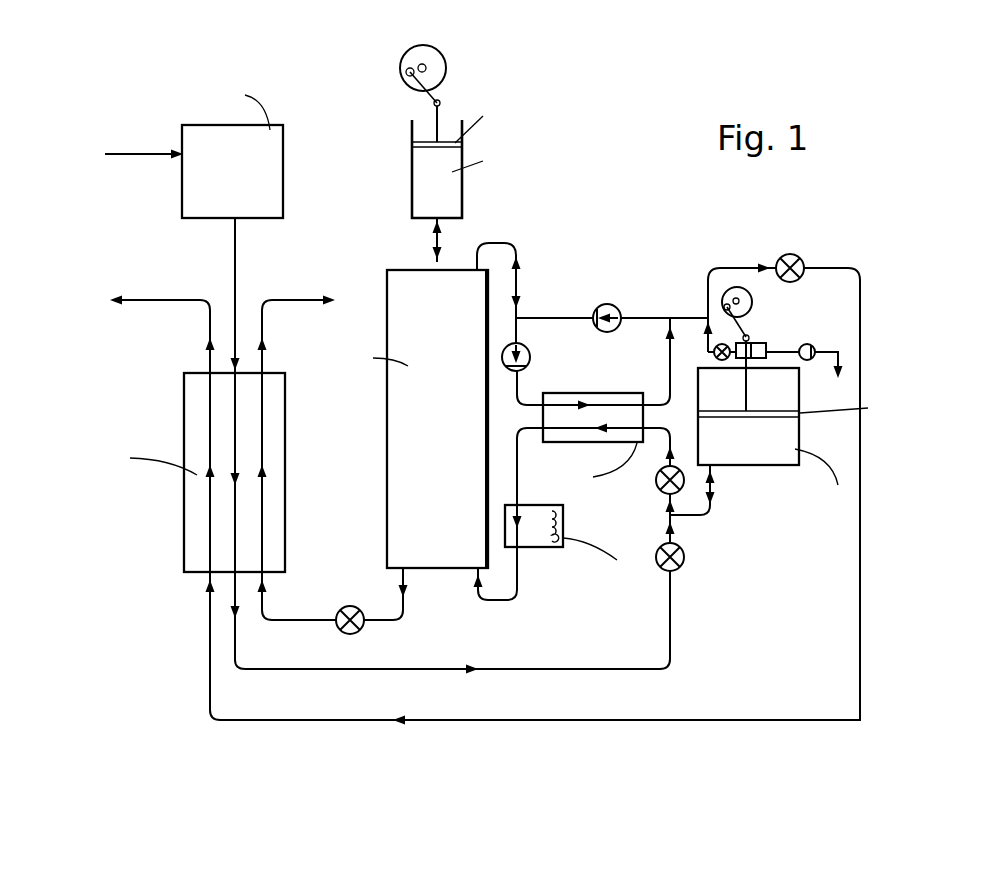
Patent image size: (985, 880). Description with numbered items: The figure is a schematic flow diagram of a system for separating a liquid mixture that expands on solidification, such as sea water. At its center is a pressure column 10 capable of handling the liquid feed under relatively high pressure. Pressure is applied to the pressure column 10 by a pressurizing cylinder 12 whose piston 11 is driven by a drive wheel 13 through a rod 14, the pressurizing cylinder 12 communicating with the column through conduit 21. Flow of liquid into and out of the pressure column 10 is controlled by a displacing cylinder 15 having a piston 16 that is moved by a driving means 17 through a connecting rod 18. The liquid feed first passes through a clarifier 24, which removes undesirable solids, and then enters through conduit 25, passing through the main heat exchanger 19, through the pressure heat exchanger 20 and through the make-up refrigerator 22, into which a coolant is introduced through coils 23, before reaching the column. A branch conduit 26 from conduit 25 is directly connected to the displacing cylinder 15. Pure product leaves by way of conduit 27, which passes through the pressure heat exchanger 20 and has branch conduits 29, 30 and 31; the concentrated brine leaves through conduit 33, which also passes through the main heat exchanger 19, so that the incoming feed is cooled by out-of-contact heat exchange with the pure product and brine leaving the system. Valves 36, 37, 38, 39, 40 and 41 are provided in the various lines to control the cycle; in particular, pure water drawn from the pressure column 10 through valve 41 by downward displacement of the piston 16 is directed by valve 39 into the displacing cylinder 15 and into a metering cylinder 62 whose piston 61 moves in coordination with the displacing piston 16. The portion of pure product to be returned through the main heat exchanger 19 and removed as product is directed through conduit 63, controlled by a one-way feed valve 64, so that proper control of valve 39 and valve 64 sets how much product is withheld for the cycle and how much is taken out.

The pressure column 10 is at (448, 435).
The piston 11 is at (425, 140).
The pressurizing cylinder 12 is at (452, 204).
The drive wheel 13 is at (431, 69).
The rod 14 is at (440, 99).
The displacing cylinder 15 is at (783, 441).
The piston 16 is at (770, 412).
The driving means 17 is at (752, 302).
The connecting rod 18 is at (750, 341).
The main heat exchanger 19 is at (275, 506).
The pressure heat exchanger 20 is at (565, 393).
The conduit 21 is at (440, 247).
The make-up refrigerator 22 is at (565, 512).
The coils 23 is at (562, 530).
The clarifier 24 is at (246, 185).
The conduit 25 is at (237, 262).
The branch conduit 26 is at (712, 502).
The conduit 27 is at (175, 296).
The branch conduit 29 is at (537, 318).
The branch conduit 30 is at (520, 289).
The branch conduit 31 is at (707, 349).
The conduit 33 is at (265, 361).
The valve 36 is at (364, 630).
The valve 37 is at (661, 494).
The valve 38 is at (684, 561).
The valve 39 is at (800, 261).
The valve 40 is at (526, 353).
The valve 41 is at (618, 312).
The piston 61 is at (744, 359).
The metering cylinder 62 is at (760, 359).
The conduit 63 is at (826, 352).
The one-way feed valve 64 is at (806, 344).